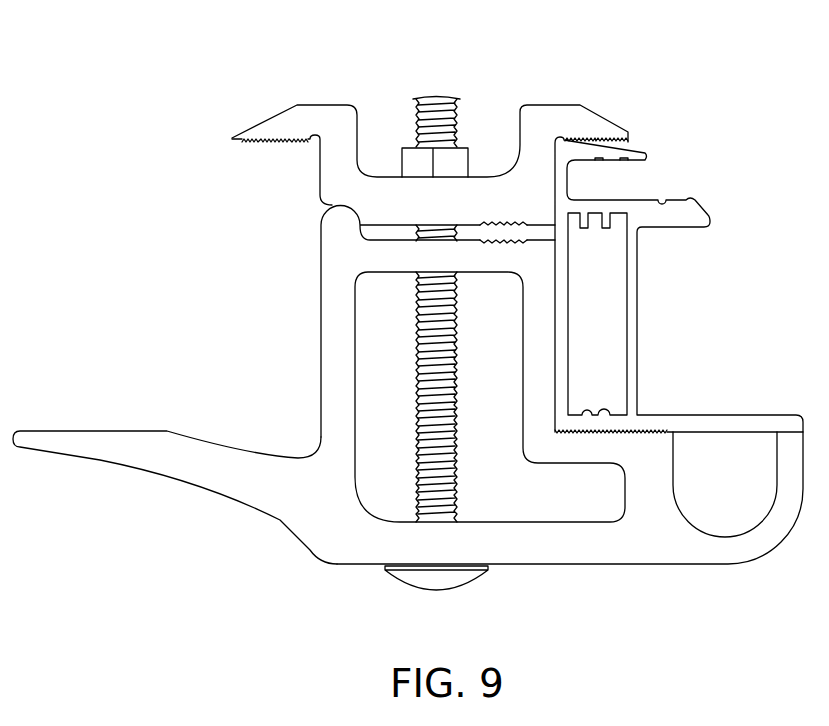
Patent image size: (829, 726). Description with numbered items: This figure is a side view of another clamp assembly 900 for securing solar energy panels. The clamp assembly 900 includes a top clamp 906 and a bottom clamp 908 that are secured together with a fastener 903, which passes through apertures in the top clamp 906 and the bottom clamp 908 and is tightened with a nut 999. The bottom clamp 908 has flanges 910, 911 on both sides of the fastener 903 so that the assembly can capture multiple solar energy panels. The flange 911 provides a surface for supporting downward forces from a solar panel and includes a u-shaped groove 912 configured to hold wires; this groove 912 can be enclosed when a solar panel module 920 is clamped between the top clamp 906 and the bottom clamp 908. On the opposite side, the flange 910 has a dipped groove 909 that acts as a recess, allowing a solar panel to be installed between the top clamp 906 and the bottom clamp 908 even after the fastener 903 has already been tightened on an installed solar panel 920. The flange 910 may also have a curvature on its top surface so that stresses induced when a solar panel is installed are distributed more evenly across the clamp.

The clamp assembly 900 is at (199, 47).
The fastener 903 is at (440, 97).
The top clamp 906 is at (550, 105).
The bottom clamp 908 is at (260, 507).
The dipped groove 909 is at (295, 439).
The flange 910 is at (120, 410).
The flange 911 is at (695, 570).
The u-shaped groove 912 is at (730, 530).
The solar panel module 920 is at (688, 198).
The nut 999 is at (470, 148).